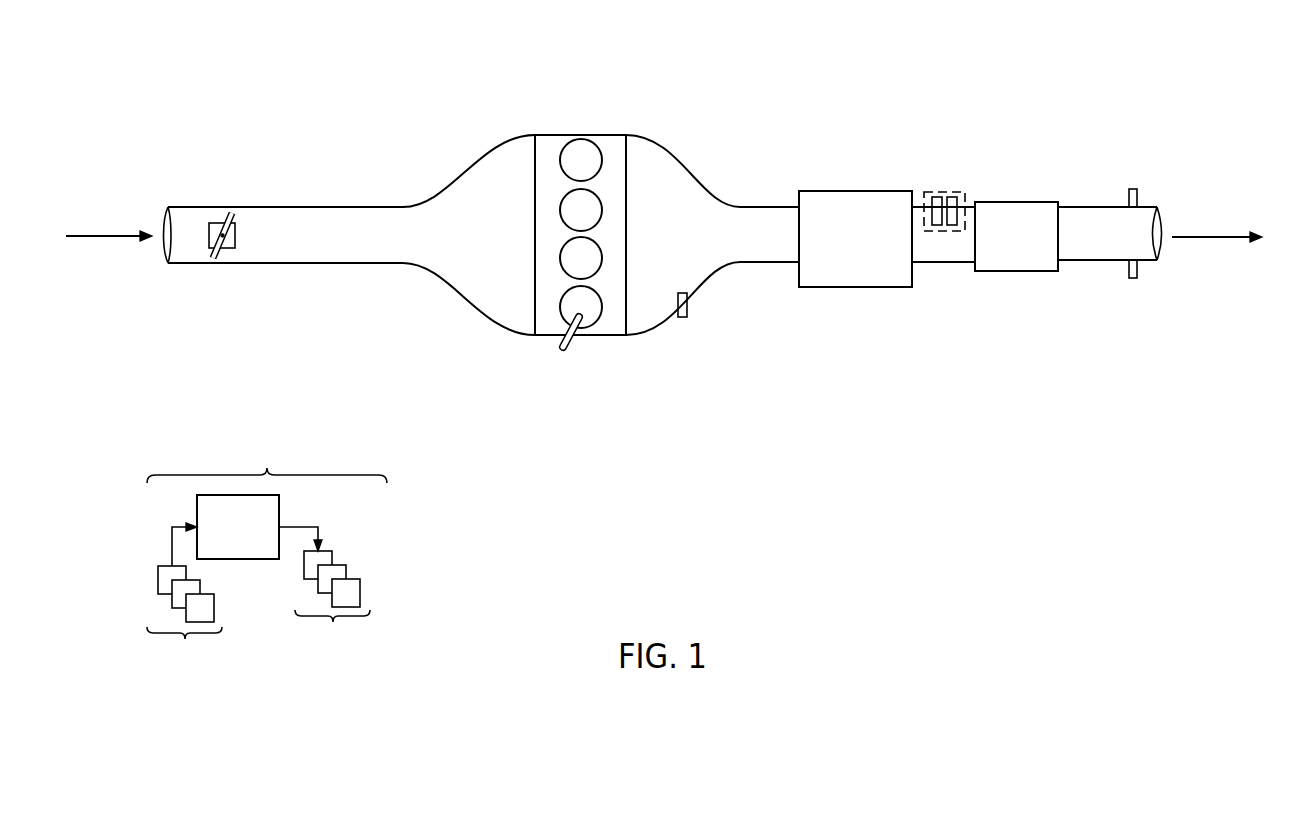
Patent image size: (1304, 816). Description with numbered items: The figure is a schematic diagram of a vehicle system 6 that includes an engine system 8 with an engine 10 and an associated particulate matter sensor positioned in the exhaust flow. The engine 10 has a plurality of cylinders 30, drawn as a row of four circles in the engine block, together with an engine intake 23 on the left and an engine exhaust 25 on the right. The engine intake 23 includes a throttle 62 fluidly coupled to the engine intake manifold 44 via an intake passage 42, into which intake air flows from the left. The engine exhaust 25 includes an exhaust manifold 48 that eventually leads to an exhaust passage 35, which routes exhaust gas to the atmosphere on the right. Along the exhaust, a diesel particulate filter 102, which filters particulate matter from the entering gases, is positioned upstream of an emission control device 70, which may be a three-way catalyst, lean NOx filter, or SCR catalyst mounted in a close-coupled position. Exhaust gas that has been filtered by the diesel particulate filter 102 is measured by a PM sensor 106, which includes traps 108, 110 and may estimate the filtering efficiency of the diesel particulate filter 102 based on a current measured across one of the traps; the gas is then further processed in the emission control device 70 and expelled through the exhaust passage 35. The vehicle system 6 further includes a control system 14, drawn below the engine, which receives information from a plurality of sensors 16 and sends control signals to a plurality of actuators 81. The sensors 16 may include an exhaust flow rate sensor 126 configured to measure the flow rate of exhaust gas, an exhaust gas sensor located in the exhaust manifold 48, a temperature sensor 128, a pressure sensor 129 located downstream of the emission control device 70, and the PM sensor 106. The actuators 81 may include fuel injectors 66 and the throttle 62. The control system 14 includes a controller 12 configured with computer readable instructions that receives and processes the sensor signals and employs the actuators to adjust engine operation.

The vehicle system 6 is at (120, 78).
The engine system 8 is at (617, 110).
The engine 10 is at (626, 218).
The controller 12 is at (238, 527).
The control system 14 is at (267, 553).
The sensors 16 is at (184, 623).
The engine intake 23 is at (345, 198).
The engine exhaust 25 is at (723, 185).
The cylinders 30 is at (598, 152).
The exhaust passage 35 is at (1096, 207).
The intake passage 42 is at (268, 263).
The engine intake manifold 44 is at (500, 250).
The exhaust manifold 48 is at (702, 250).
The throttle 62 is at (235, 243).
The fuel injectors 66 is at (566, 341).
The emission control device 70 is at (1025, 247).
The actuators 81 is at (332, 608).
The diesel particulate filter 102 is at (891, 273).
The PM sensor 106 is at (933, 230).
The trap 108 is at (930, 197).
The trap 110 is at (958, 197).
The exhaust flow rate sensor 126 is at (687, 296).
The temperature sensor 128 is at (1128, 268).
The pressure sensor 129 is at (1128, 198).